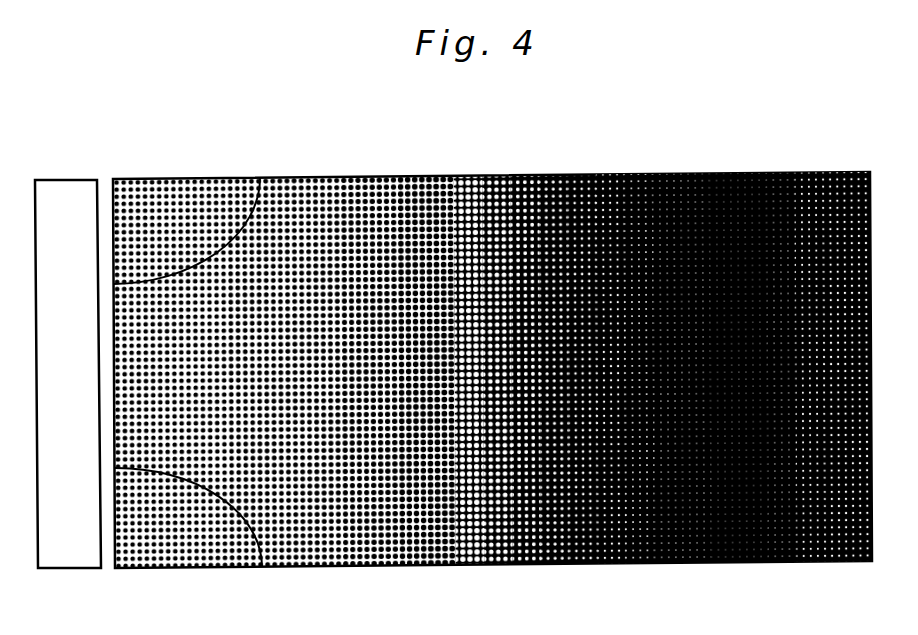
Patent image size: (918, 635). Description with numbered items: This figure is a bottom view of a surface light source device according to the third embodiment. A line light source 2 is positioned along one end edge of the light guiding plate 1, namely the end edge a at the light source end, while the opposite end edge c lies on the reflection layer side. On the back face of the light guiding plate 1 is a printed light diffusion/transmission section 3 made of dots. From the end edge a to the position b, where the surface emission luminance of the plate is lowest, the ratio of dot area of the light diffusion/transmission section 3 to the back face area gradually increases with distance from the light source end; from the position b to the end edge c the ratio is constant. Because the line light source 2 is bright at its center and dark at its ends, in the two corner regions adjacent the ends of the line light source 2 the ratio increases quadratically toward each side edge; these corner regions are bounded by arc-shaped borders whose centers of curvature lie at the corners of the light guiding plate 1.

The light guiding plate 1 is at (299, 172).
The line light source 2 is at (68, 196).
The light diffusion/transmission section 3 is at (752, 174).
The end edge at the line light source end a is at (113, 178).
The position of lowest surface emission luminance b is at (616, 174).
The end edge on the reflection layer side c is at (866, 172).